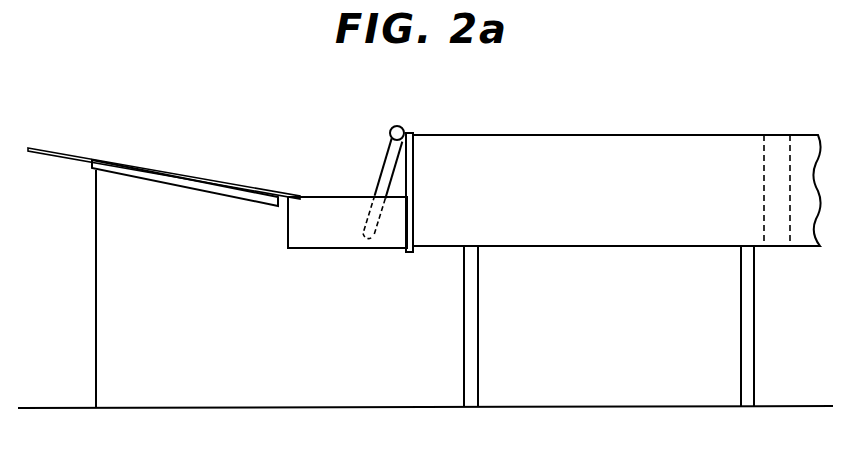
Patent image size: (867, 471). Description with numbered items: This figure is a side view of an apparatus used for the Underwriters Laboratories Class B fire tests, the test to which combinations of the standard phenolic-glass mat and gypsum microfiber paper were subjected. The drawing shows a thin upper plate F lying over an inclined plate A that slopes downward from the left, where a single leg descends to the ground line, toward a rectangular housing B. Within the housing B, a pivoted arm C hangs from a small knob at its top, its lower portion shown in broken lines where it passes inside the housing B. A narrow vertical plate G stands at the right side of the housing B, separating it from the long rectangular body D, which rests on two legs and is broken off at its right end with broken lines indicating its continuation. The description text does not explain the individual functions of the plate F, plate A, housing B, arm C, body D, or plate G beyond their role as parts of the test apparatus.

The feed plate F is at (56, 149).
The inclined ramp plate A is at (90, 164).
The housing box B is at (302, 270).
The pivot arm C is at (354, 222).
The main unit D is at (636, 182).
The vertical plate G is at (405, 253).